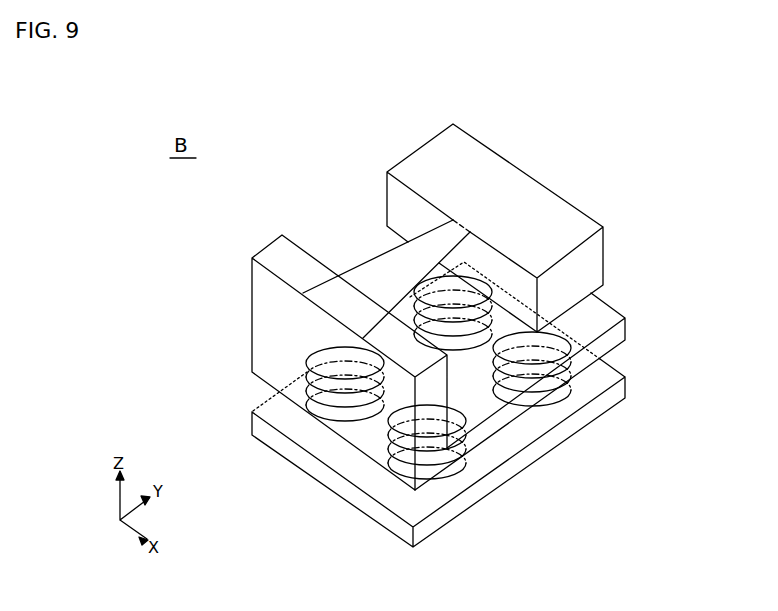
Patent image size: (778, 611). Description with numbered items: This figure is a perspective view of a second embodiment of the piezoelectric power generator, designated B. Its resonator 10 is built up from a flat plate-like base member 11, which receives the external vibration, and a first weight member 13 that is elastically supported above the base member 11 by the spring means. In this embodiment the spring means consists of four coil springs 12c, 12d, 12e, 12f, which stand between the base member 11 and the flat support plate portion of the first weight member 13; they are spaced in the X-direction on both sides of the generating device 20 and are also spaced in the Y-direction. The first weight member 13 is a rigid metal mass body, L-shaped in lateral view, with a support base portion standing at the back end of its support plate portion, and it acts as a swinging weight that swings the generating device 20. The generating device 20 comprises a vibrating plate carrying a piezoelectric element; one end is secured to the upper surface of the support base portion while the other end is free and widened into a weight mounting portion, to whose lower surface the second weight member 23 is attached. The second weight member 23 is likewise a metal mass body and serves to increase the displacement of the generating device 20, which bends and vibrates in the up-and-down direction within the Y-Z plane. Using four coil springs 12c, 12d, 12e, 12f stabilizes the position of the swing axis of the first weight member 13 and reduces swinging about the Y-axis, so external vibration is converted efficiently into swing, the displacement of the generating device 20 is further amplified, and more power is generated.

The resonator 10 is at (499, 404).
The base member 11 is at (618, 395).
The first weight member 13 is at (690, 399).
The coil spring 12c is at (457, 476).
The coil spring 12d is at (318, 420).
The coil spring 12e is at (562, 399).
The coil spring 12f is at (488, 293).
The generating device 20 is at (356, 260).
The second weight member 23 is at (395, 200).